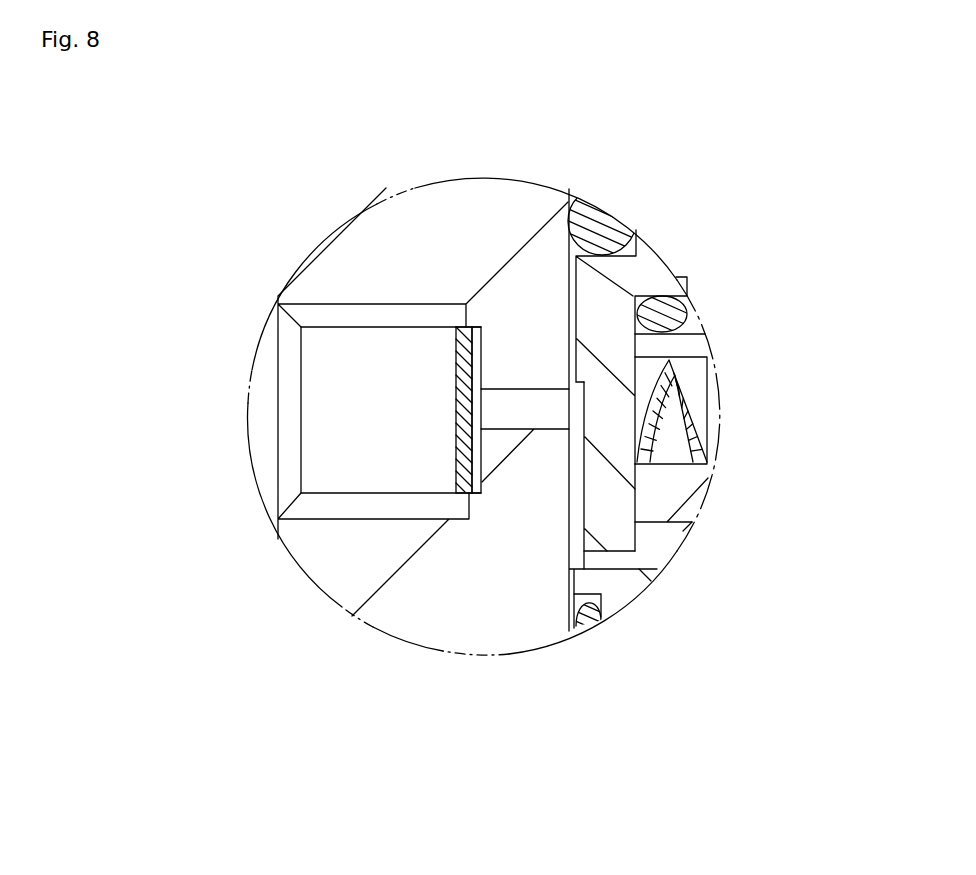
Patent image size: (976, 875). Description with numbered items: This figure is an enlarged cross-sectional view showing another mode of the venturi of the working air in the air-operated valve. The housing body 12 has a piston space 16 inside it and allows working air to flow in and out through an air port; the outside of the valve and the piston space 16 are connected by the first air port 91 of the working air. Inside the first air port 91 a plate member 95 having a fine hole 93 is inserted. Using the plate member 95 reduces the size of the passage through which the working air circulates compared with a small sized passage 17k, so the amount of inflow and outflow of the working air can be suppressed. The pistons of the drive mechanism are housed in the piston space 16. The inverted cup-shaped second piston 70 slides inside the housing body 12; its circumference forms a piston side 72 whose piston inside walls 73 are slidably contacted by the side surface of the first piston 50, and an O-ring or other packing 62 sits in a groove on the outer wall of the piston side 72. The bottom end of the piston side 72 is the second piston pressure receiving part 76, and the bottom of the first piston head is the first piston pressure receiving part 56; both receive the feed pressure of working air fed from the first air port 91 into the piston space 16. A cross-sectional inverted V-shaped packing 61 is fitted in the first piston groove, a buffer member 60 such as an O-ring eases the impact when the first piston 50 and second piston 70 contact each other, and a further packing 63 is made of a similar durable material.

The housing body 12 is at (327, 232).
The piston space 16 is at (578, 540).
The small sized passage 17k is at (527, 400).
The first piston 50 is at (698, 347).
The first piston pressure receiving part 56 is at (688, 530).
The buffer member 60 is at (690, 300).
The packing 61 is at (710, 410).
The packing 62 is at (602, 218).
The packing 63 is at (573, 620).
The second piston 70 is at (657, 265).
The piston side 72 is at (597, 492).
The piston inside walls 73 is at (640, 503).
The second piston pressure receiving part 76 is at (618, 552).
The first air port 91 is at (327, 380).
The fine hole 93 is at (462, 410).
The plate member 95 is at (460, 448).